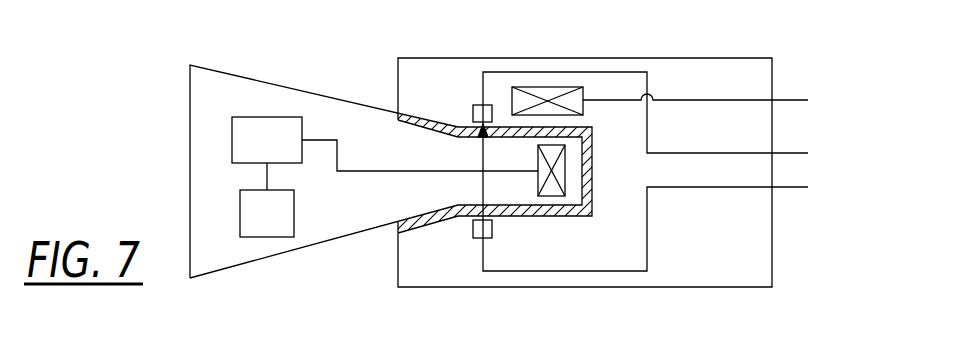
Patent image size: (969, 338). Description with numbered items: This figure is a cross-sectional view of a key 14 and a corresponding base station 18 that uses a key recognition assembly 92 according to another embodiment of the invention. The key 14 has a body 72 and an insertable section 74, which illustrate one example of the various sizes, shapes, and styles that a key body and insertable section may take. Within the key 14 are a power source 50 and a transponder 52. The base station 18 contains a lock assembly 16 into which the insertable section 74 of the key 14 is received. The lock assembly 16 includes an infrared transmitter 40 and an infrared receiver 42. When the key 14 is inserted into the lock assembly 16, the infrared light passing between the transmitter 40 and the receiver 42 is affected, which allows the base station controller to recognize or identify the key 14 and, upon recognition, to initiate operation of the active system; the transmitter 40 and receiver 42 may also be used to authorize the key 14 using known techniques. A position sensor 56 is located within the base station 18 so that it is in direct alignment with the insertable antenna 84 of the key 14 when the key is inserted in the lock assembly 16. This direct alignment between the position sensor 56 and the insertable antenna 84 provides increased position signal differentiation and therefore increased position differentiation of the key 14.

The key 14 is at (225, 72).
The body 72 is at (218, 272).
The transponder 52 is at (232, 140).
The power source 50 is at (240, 211).
The base station 18 is at (725, 58).
The lock assembly 16 is at (593, 152).
The insertable section 74 is at (460, 127).
The key recognition assembly 92 is at (466, 224).
The infrared receiver 42 is at (487, 105).
The infrared transmitter 40 is at (492, 230).
The position sensor 56 is at (545, 87).
The insertable antenna 84 is at (565, 172).